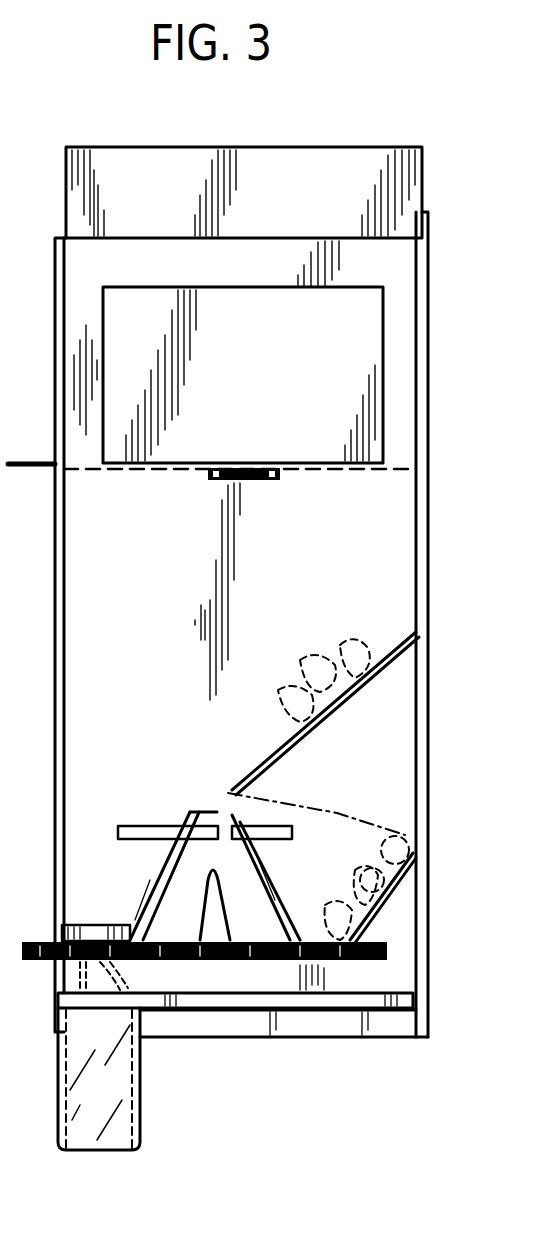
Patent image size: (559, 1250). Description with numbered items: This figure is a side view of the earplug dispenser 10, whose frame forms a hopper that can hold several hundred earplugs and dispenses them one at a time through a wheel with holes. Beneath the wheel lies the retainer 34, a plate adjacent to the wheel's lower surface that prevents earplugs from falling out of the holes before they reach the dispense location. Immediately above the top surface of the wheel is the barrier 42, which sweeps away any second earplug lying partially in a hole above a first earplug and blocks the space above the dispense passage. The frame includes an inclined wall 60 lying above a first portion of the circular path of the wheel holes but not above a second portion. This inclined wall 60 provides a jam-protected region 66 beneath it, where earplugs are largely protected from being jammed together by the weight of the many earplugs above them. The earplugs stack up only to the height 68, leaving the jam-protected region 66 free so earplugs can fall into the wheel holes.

The earplug dispenser 10 is at (100, 116).
The retainer 34 is at (92, 1003).
The barrier 42 is at (88, 925).
The inclined wall 60 is at (352, 690).
The jam-protected region 66 is at (388, 756).
The height of earplug stack 68 is at (337, 813).